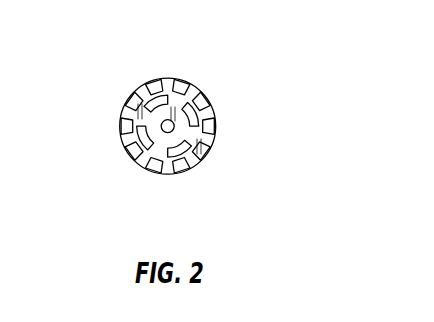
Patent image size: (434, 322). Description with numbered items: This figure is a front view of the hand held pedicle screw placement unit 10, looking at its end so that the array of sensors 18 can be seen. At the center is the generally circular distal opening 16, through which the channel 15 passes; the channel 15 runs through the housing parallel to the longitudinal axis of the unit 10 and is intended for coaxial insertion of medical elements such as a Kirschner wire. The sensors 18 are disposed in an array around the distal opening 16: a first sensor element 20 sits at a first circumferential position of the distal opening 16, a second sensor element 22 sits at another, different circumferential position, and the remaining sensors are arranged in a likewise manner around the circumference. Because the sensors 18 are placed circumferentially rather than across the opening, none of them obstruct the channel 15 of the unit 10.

The hand held pedicle screw placement unit 10 is at (115, 59).
The sensors 18 is at (215, 84).
The second sensor element 22 is at (121, 113).
The first sensor element 20 is at (128, 147).
The channel 15 is at (174, 126).
The distal opening 16 is at (168, 133).